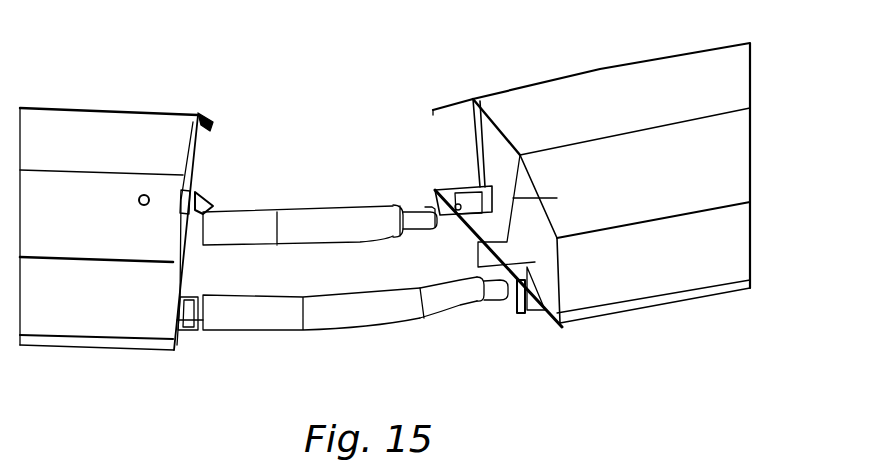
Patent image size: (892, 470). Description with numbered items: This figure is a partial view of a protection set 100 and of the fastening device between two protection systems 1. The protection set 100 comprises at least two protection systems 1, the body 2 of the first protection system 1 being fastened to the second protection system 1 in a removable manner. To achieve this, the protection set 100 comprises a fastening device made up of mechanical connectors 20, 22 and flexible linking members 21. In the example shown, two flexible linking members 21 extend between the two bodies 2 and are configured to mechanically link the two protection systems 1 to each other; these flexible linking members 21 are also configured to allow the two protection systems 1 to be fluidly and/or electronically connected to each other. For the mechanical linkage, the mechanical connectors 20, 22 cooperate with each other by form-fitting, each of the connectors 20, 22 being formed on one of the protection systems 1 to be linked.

The protection system 1 is at (160, 95).
The body 2 is at (92, 138).
The mechanical connector 20 is at (214, 207).
The flexible linking member 21 is at (312, 230).
The mechanical connector 22 is at (420, 212).
The protection set 100 is at (154, 404).